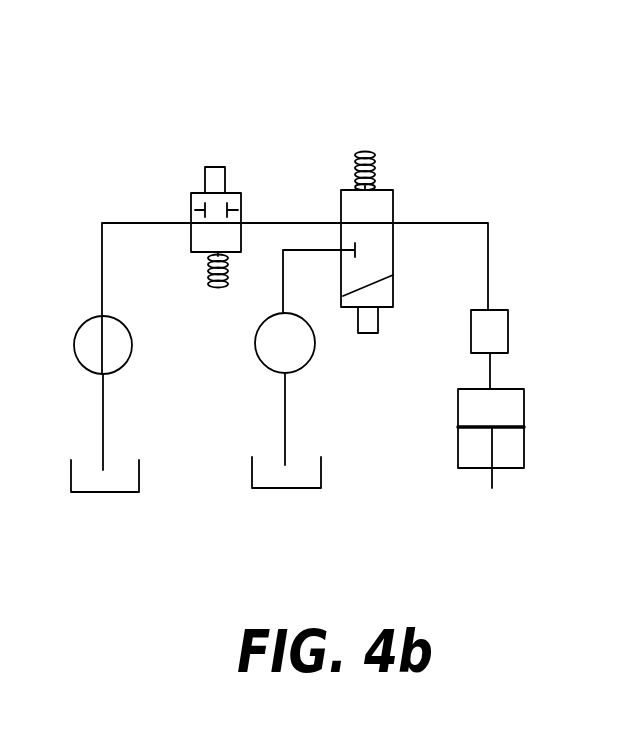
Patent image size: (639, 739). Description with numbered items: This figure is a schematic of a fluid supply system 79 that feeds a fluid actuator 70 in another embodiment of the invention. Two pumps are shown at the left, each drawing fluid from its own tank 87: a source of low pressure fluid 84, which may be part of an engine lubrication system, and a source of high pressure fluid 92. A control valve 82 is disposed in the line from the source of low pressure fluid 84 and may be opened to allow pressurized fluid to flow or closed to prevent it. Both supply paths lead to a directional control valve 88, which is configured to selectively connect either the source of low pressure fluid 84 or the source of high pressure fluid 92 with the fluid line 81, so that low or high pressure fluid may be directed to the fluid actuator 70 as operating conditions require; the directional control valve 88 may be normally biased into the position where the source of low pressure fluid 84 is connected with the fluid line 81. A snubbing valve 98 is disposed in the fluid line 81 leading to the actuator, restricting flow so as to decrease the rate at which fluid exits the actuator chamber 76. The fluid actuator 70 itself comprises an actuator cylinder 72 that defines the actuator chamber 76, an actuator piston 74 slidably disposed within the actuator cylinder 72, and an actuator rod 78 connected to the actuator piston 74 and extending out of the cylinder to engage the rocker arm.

The fluid actuator 70 is at (499, 439).
The actuator cylinder 72 is at (524, 440).
The actuator piston 74 is at (472, 432).
The actuator chamber 76 is at (458, 400).
The actuator rod 78 is at (494, 475).
The fluid supply system 79 is at (386, 183).
The fluid line 81 is at (488, 243).
The control valve 82 is at (241, 194).
The source of low pressure fluid 84 is at (132, 345).
The tank 87 is at (106, 492).
The directional control valve 88 is at (409, 205).
The source of high pressure fluid 92 is at (315, 340).
The snubbing valve 98 is at (508, 322).